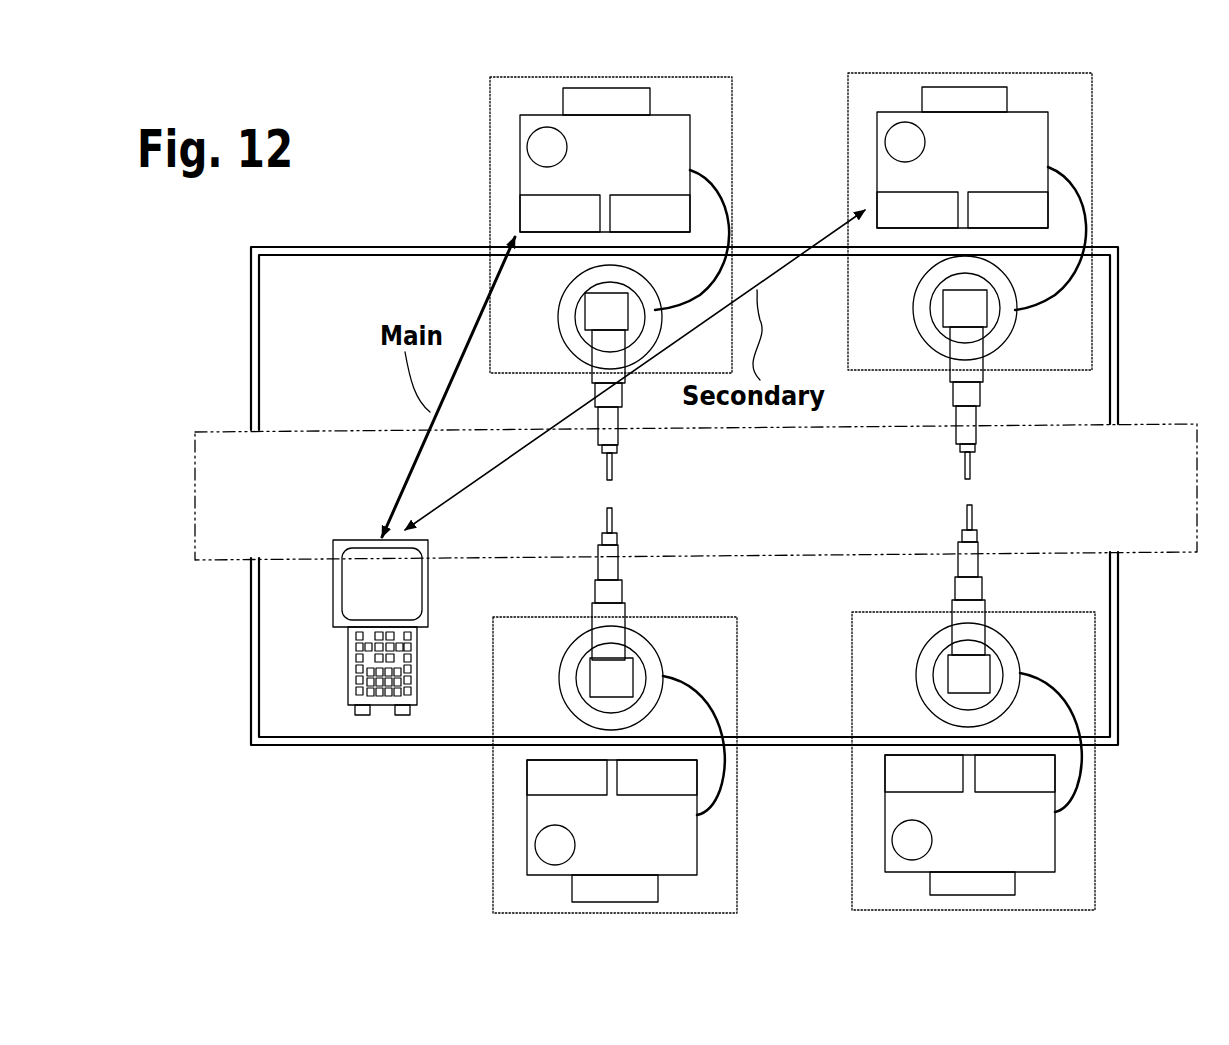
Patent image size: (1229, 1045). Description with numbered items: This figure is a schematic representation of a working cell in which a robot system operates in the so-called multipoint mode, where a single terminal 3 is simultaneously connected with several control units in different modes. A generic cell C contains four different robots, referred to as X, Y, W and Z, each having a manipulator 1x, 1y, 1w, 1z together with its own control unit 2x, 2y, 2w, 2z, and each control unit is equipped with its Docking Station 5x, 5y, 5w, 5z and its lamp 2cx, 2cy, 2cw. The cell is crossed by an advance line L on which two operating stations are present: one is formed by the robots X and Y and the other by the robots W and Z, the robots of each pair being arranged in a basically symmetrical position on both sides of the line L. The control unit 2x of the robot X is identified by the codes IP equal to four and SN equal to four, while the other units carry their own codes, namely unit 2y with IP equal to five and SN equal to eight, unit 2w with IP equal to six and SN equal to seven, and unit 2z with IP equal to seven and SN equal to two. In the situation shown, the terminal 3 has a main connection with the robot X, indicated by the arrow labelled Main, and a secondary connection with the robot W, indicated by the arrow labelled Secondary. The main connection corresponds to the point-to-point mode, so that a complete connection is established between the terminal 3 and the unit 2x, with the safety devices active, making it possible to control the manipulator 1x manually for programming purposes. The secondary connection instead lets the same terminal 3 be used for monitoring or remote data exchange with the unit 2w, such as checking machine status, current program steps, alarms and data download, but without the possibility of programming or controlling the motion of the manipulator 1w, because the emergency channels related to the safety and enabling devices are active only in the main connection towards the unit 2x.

The cell C is at (325, 760).
The advance line L is at (221, 428).
The robot X is at (484, 138).
The robot W is at (1100, 209).
The robot Y is at (486, 768).
The robot Z is at (1106, 830).
The manipulator 1x is at (550, 335).
The manipulator 1w is at (908, 333).
The manipulator 1y is at (664, 652).
The manipulator 1z is at (1021, 648).
The control unit 2x is at (696, 137).
The control unit 2w is at (1052, 132).
The control unit 2y is at (524, 812).
The control unit 2z is at (882, 808).
The lamp 2cx is at (552, 152).
The lamp 2cw is at (910, 147).
The lamp 2cy is at (560, 850).
The Docking Station 5x is at (630, 100).
The Docking Station 5w is at (988, 98).
The Docking Station 5y is at (578, 895).
The Docking Station 5z is at (940, 890).
The terminal 3 is at (319, 606).